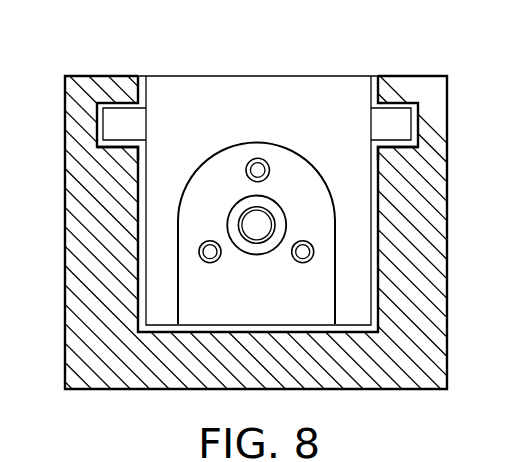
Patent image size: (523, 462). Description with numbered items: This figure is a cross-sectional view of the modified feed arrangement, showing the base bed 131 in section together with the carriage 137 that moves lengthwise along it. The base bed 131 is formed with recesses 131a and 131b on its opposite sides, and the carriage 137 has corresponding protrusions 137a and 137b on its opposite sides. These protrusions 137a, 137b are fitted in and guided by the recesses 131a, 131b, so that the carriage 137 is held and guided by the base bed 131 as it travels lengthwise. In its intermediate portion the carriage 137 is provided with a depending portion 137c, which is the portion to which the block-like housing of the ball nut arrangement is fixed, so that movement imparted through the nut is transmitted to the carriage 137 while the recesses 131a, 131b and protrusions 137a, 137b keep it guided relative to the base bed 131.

The base bed 131 is at (368, 382).
The recess 131a is at (118, 138).
The recess 131b is at (398, 143).
The carriage 137 is at (238, 182).
The protrusion 137a is at (114, 117).
The protrusion 137b is at (388, 122).
The depending portion 137c is at (358, 270).